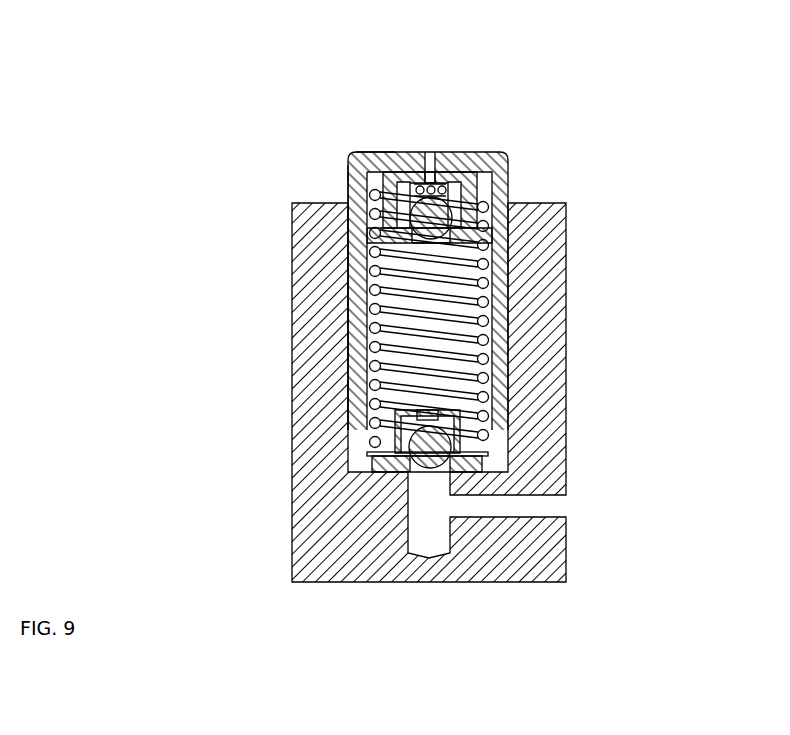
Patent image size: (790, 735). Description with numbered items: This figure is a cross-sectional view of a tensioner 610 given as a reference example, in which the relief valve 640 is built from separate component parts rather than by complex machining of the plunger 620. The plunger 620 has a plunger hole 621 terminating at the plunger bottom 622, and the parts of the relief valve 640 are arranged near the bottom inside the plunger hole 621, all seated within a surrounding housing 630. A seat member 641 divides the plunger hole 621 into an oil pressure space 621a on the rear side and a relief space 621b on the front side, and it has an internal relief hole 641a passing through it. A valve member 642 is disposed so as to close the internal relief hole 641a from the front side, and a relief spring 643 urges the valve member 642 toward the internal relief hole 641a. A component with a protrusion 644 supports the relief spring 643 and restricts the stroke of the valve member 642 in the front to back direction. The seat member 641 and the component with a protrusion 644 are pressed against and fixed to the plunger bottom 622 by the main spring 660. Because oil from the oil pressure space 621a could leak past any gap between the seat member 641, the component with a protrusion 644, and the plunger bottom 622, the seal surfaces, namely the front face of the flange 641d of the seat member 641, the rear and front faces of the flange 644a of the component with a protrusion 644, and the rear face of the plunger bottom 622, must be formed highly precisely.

The tensioner 610 is at (200, 78).
The plunger 620 is at (332, 244).
The plunger hole 621 is at (320, 291).
The oil pressure space 621a is at (365, 279).
The relief space 621b is at (365, 224).
The plunger bottom 622 is at (405, 152).
The housing body 630 is at (292, 447).
The relief valve 640 is at (492, 196).
The seat member 641 is at (452, 218).
The internal relief hole 641a is at (456, 252).
The flange of the seat member 641d is at (345, 170).
The valve member 642 is at (508, 240).
The relief spring 643 is at (478, 192).
The component with a protrusion 644 is at (500, 143).
The flange of the component with a protrusion 644a is at (362, 152).
The main spring 660 is at (487, 372).